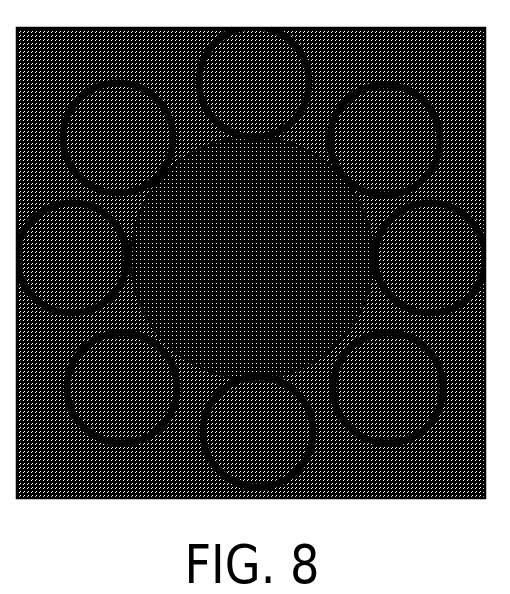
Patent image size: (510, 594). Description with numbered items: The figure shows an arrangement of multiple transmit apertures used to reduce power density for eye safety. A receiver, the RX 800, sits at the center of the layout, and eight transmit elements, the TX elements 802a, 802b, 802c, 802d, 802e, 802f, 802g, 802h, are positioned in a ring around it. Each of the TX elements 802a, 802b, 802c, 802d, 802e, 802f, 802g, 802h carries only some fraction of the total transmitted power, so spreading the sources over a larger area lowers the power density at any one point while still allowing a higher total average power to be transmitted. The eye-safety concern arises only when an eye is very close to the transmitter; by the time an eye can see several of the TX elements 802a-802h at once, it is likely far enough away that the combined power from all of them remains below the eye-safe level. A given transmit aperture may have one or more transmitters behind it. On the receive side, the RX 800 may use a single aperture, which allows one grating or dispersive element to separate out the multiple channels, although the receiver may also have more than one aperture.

The RX 800 is at (252, 258).
The TX element 802a is at (254, 82).
The TX element 802b is at (385, 140).
The TX element 802c is at (430, 258).
The TX element 802d is at (388, 388).
The TX element 802e is at (258, 432).
The TX element 802f is at (122, 388).
The TX element 802g is at (72, 258).
The TX element 802h is at (118, 138).